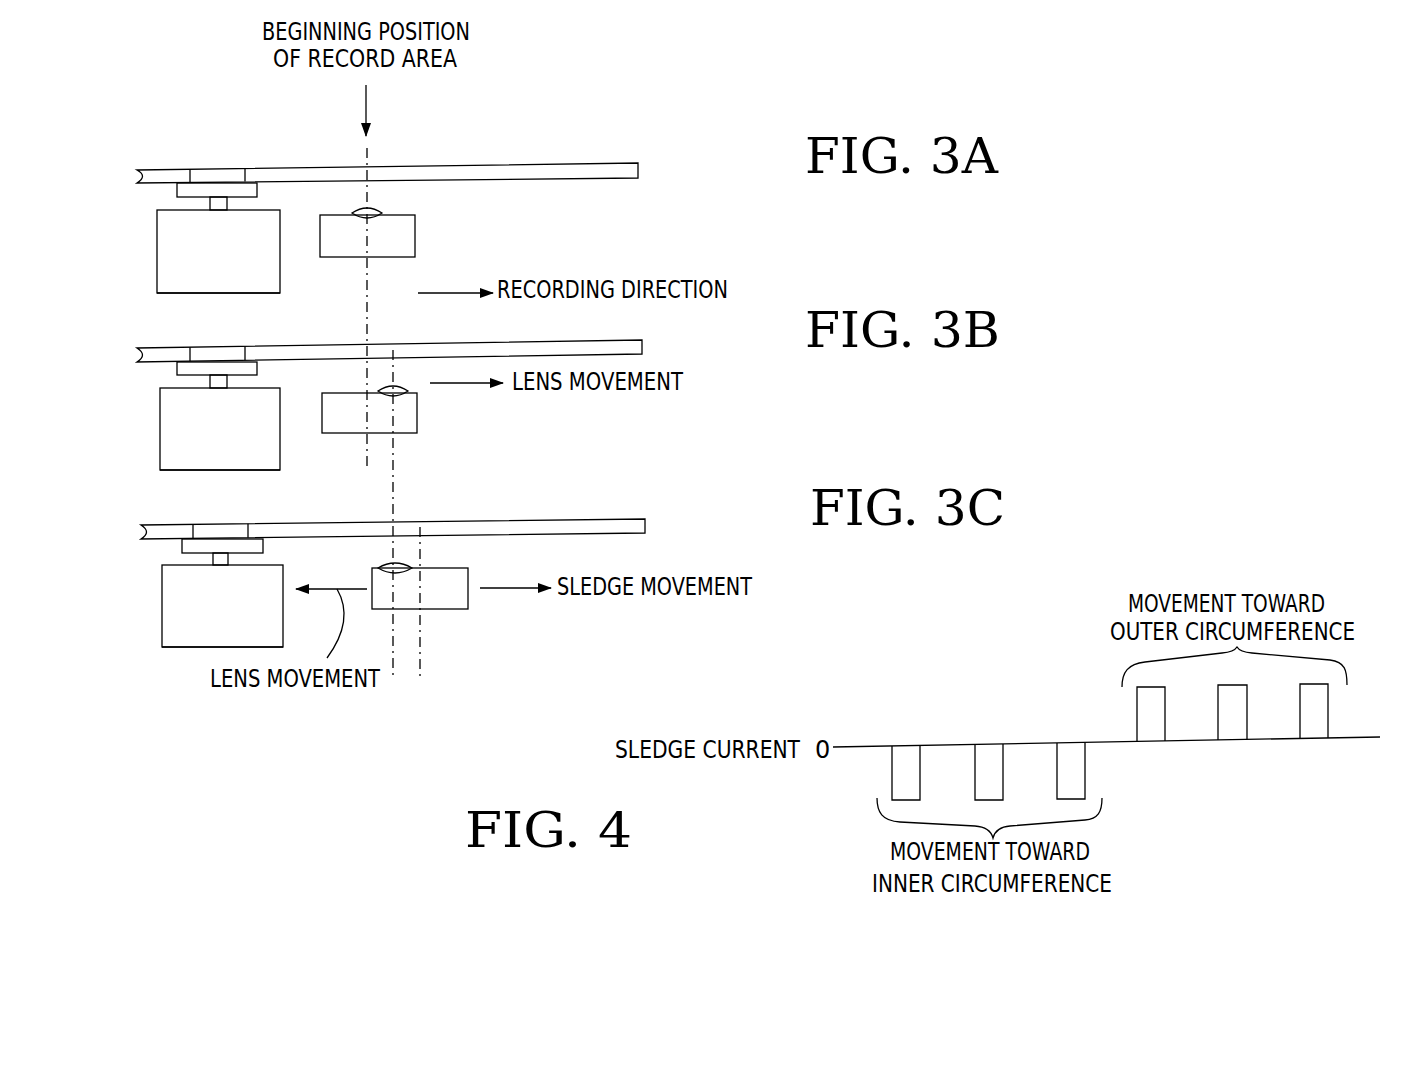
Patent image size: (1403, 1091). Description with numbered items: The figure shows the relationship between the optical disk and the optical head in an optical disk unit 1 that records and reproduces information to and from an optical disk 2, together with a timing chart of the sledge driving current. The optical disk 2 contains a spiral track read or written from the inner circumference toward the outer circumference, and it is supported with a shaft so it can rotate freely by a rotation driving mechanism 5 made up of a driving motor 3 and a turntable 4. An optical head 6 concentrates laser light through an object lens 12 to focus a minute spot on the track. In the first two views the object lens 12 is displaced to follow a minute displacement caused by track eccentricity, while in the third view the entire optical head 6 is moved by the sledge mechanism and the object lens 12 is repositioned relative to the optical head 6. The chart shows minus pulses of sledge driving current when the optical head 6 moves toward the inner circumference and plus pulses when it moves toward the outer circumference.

In FIG. 3A, the optical disk unit 1 is at (662, 97).
In FIG. 3B, the optical disk unit 1 is at (700, 251).
In FIG. 3C, the optical disk unit 1 is at (692, 472).
In FIG. 3A, the optical disk 2 is at (578, 164).
In FIG. 3B, the optical disk 2 is at (583, 341).
In FIG. 3C, the optical disk 2 is at (583, 519).
In FIG. 3A, the driving motor 3 is at (170, 240).
In FIG. 3B, the driving motor 3 is at (173, 418).
In FIG. 3C, the driving motor 3 is at (175, 596).
In FIG. 3A, the turntable 4 is at (177, 190).
In FIG. 3B, the turntable 4 is at (177, 368).
In FIG. 3C, the turntable 4 is at (182, 546).
In FIG. 3A, the rotation driving mechanism 5 is at (148, 294).
In FIG. 3B, the rotation driving mechanism 5 is at (150, 471).
In FIG. 3C, the rotation driving mechanism 5 is at (150, 648).
In FIG. 3A, the optical head 6 is at (412, 239).
In FIG. 3B, the optical head 6 is at (416, 421).
In FIG. 3C, the optical head 6 is at (462, 609).
In FIG. 3A, the object lens 12 is at (381, 212).
In FIG. 3B, the object lens 12 is at (412, 394).
In FIG. 3C, the object lens 12 is at (383, 568).